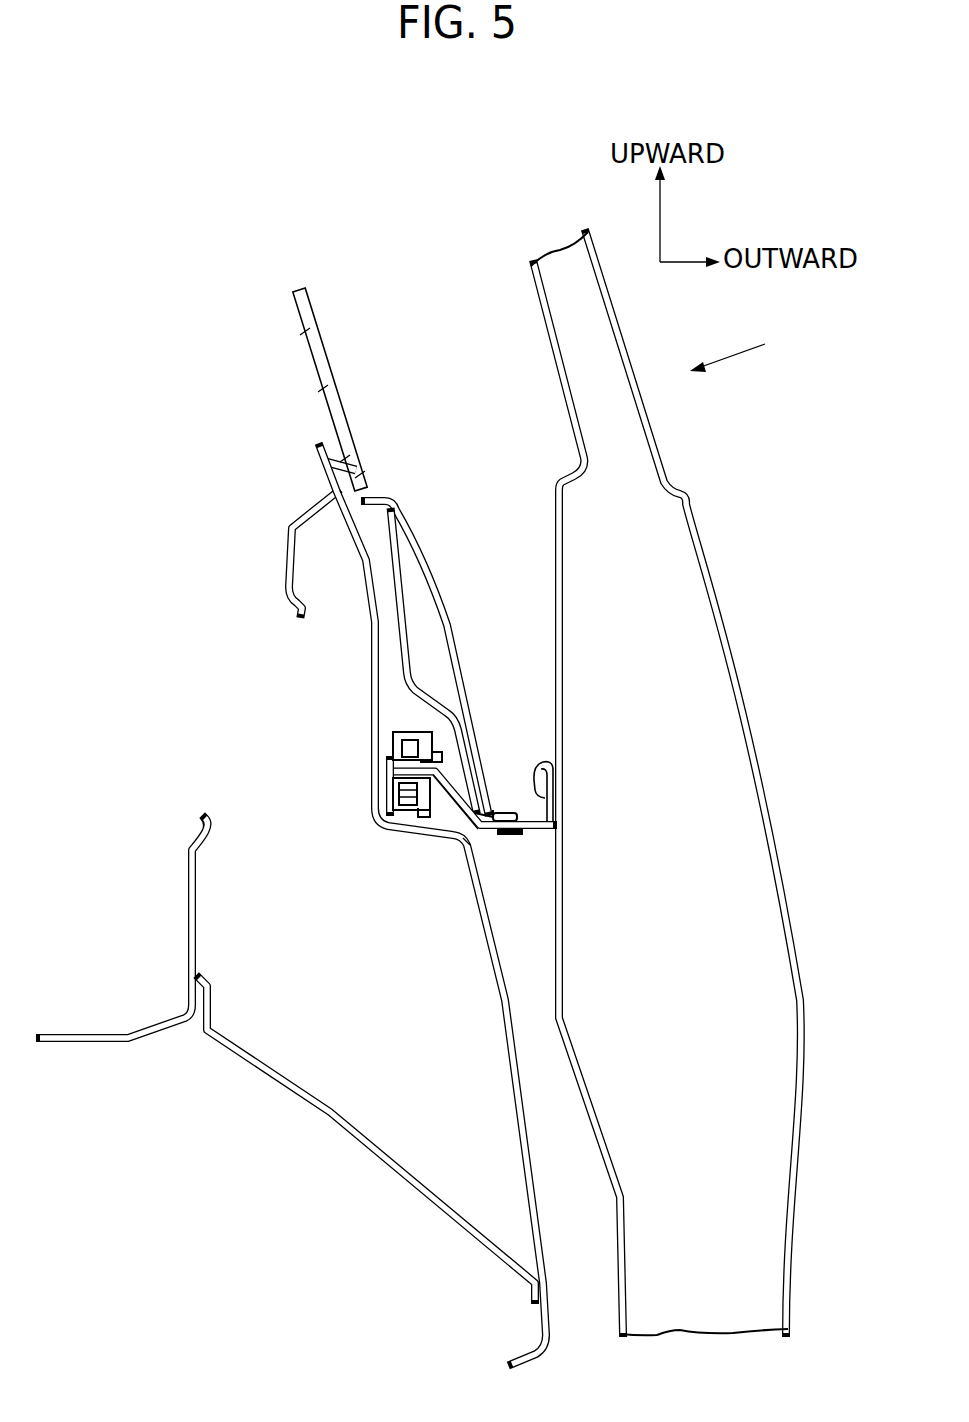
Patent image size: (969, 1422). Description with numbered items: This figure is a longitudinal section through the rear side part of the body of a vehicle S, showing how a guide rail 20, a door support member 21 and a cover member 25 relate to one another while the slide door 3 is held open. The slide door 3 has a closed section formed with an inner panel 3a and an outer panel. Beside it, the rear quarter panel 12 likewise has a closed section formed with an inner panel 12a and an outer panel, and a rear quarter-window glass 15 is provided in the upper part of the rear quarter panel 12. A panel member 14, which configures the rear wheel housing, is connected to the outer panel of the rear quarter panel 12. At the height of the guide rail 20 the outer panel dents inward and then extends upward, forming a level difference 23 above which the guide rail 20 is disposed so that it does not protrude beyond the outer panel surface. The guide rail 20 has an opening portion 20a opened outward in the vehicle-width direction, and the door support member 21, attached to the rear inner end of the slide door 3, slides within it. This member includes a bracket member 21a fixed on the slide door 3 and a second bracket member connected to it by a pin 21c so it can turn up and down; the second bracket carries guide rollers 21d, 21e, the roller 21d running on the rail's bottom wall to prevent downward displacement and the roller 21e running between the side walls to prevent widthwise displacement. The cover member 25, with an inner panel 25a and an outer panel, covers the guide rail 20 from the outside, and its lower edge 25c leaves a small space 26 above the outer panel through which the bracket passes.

The slide door 3 is at (754, 712).
The inner panel 3a is at (566, 973).
The rear quarter panel 12 is at (500, 1022).
The inner panel 12a is at (285, 573).
The panel member 14 is at (298, 1093).
The rear quarter-window glass 15 is at (309, 313).
The guide rail 20 is at (413, 733).
The opening portion 20a is at (447, 833).
The door support member 21 is at (452, 784).
The bracket member 21a is at (553, 772).
The pin 21c is at (520, 810).
The guide roller 21d is at (397, 788).
The guide roller 21e is at (393, 743).
The level difference 23 is at (438, 824).
The cover member 25 is at (418, 552).
The inner panel 25a is at (408, 612).
The lower edge 25c is at (493, 812).
The space 26 is at (483, 847).
The vehicle S is at (795, 354).